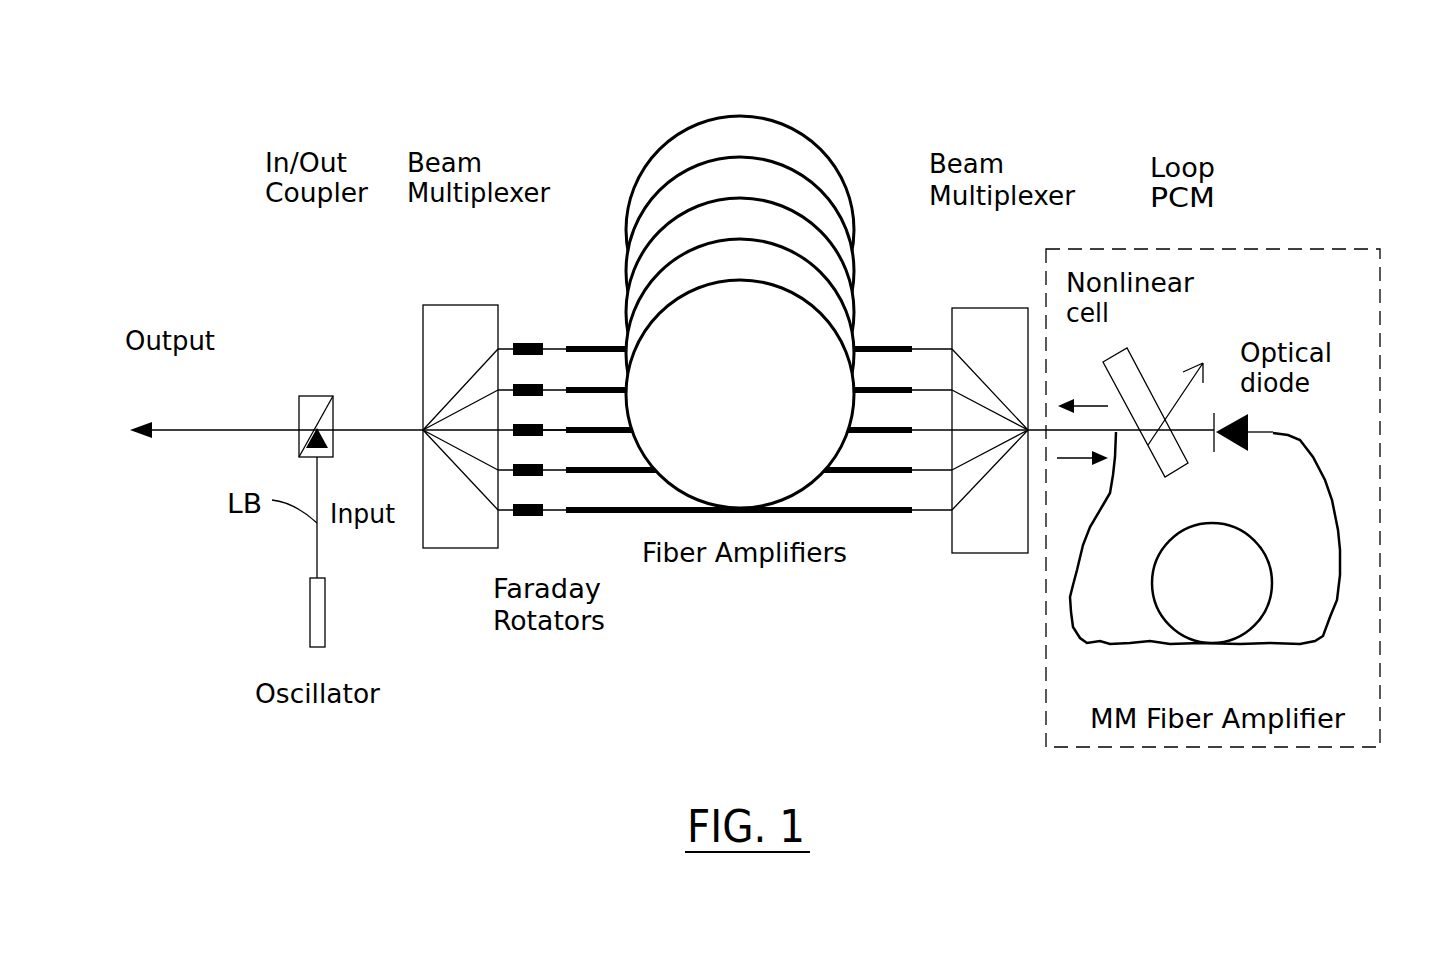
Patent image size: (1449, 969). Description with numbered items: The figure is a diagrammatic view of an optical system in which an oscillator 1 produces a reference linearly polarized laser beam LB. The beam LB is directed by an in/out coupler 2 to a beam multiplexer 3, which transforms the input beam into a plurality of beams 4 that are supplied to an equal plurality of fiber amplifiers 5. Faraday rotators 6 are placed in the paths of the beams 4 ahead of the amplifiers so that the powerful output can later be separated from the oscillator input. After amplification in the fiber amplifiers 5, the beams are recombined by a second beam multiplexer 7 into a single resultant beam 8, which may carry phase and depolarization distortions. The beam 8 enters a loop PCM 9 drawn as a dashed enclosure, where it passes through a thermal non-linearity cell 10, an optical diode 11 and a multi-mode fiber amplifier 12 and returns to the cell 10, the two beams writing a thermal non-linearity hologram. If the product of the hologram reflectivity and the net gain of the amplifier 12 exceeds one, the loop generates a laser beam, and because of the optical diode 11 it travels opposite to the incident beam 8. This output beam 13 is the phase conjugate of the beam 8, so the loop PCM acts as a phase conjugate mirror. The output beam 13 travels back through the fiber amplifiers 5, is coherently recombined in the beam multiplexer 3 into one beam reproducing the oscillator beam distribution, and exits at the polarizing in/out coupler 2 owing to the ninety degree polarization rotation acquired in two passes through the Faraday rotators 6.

The oscillator 1 is at (308, 616).
The in/out coupler 2 is at (322, 396).
The beam multiplexer 3 is at (457, 542).
The beams 4 is at (554, 514).
The fiber amplifiers 5 is at (781, 320).
The Faraday rotators 6 is at (510, 514).
The second beam multiplexer 7 is at (1005, 545).
The resultant beam 8 is at (1118, 440).
The loop PCM 9 is at (1337, 241).
The thermal non-linearity cell 10 is at (1178, 468).
The optical diode 11 is at (1268, 432).
The multi-mode fiber amplifier 12 is at (1212, 583).
The output beam 13 is at (1088, 403).